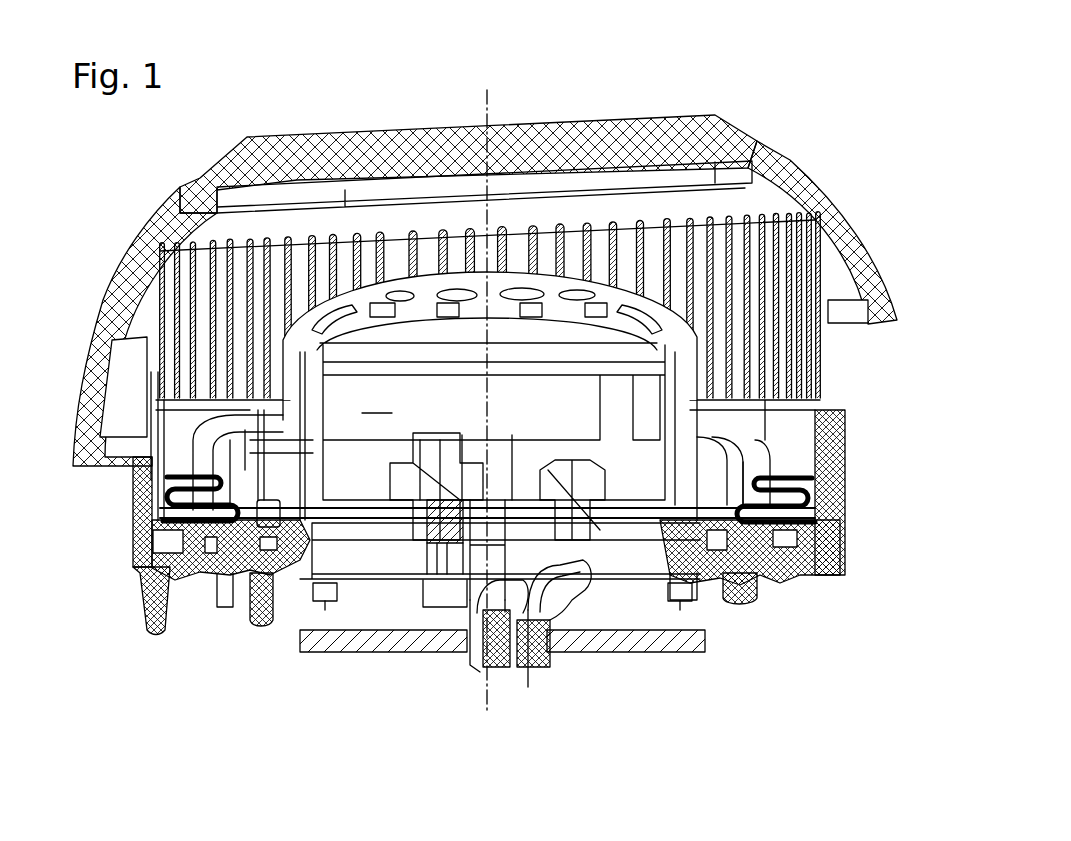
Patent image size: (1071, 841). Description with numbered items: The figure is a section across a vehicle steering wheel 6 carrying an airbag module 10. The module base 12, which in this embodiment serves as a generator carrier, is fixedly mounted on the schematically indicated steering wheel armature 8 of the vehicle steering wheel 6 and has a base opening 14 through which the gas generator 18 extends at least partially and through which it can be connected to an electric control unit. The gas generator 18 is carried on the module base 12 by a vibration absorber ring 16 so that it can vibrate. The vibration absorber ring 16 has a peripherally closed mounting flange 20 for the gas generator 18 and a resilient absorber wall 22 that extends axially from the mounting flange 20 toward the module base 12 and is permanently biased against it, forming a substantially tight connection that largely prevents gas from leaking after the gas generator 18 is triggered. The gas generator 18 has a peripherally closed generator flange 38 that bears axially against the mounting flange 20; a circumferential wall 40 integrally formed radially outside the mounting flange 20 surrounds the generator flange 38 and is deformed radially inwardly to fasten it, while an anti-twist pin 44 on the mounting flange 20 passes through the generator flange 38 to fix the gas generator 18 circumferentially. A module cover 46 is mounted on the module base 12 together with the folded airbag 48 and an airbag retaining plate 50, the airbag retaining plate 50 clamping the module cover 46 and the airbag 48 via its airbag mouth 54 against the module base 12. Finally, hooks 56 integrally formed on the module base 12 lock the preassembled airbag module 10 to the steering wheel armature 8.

The vehicle steering wheel 6 is at (331, 696).
The steering wheel armature 8 is at (598, 643).
The airbag module 10 is at (786, 99).
The module base 12 is at (233, 560).
The base opening 14 is at (385, 586).
The vibration absorber ring 16 is at (699, 527).
The gas generator 18 is at (494, 422).
The mounting flange 20 is at (297, 580).
The absorber wall 22 is at (247, 570).
The generator flange 38 is at (293, 497).
The circumferential wall 40 is at (275, 482).
The anti-twist pin 44 is at (293, 492).
The module cover 46 is at (400, 150).
The airbag 48 is at (747, 500).
The airbag retaining plate 50 is at (735, 462).
The airbag mouth 54 is at (767, 517).
The hooks 56 is at (477, 680).